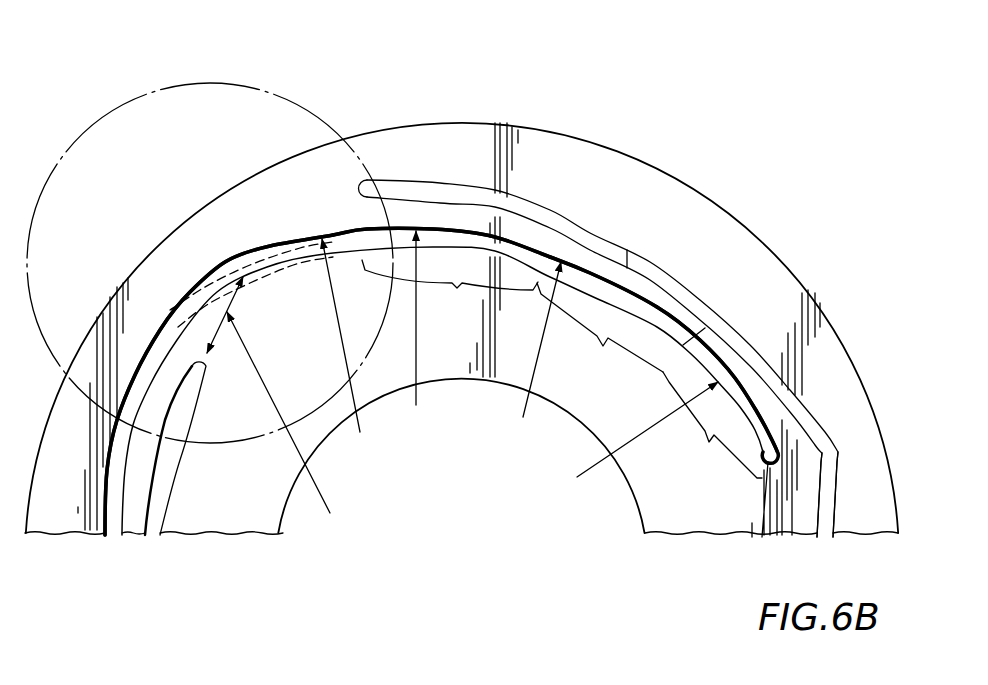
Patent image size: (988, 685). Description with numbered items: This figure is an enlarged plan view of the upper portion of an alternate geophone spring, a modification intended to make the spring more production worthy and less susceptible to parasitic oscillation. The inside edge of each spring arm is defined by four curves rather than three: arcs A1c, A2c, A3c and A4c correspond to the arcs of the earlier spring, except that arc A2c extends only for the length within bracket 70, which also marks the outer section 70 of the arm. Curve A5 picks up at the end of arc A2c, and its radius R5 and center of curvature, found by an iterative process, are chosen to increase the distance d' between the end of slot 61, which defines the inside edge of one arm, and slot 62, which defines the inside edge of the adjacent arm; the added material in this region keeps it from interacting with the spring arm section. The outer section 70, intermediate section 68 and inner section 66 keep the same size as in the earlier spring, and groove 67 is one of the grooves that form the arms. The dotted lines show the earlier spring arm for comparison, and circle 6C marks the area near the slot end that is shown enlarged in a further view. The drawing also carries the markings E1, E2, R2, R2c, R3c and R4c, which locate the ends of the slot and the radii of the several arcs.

The circle 6C is at (238, 83).
The slot 61 is at (397, 230).
The slot 62 is at (163, 325).
The inner section 66 is at (712, 425).
The groove 67 is at (163, 480).
The intermediate section 68 is at (600, 329).
The outer section 70 is at (450, 288).
The arc A1c is at (630, 250).
The arc A2c is at (437, 230).
The arc A3c is at (561, 262).
The arc A4c is at (718, 382).
The curve A5 is at (257, 247).
The distance d' is at (220, 315).
The end E1 of slot E1 is at (362, 265).
The end E2 of slot E2 is at (800, 451).
The radius R2 is at (291, 427).
The radius R2c is at (417, 336).
The radius R3c is at (528, 355).
The radius R4c is at (633, 442).
The radius R5 is at (345, 352).